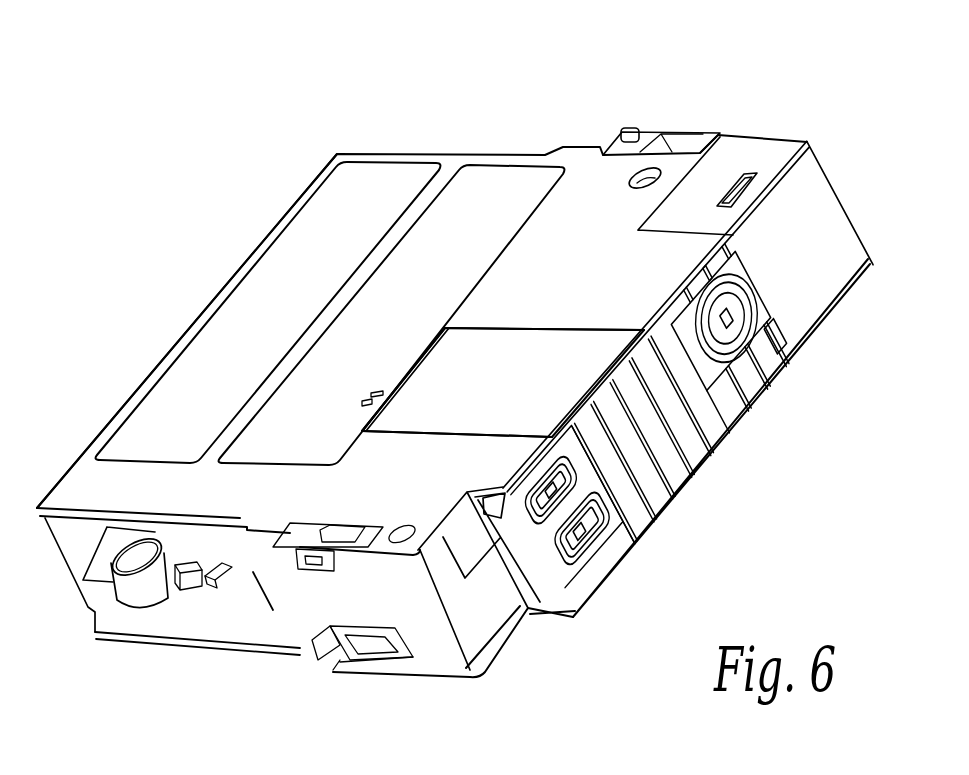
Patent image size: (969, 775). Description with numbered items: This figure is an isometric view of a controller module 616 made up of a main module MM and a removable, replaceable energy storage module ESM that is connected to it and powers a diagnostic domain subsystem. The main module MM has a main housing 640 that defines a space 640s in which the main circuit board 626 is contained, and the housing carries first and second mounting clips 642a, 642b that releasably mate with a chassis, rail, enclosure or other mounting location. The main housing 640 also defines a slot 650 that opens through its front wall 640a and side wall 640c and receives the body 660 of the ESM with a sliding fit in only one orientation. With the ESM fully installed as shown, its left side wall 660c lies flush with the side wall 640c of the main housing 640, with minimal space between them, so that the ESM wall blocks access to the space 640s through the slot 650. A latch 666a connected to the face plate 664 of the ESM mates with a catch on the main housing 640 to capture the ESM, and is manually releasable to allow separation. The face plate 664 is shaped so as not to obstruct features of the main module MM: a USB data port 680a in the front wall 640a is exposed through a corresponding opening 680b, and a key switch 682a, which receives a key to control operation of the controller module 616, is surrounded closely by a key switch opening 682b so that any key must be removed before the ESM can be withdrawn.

The controller module 616 is at (487, 142).
The main module MM is at (380, 193).
The energy storage module ESM is at (508, 362).
The main housing 640 is at (256, 324).
The front wall 640a is at (822, 292).
The side wall 640c is at (476, 308).
The space 640s is at (224, 590).
The first mounting clip 642a is at (631, 128).
The second mounting clip 642b is at (350, 650).
The main circuit board 626 is at (240, 615).
The slot 650 is at (428, 432).
The body 660 is at (455, 378).
The left side wall 660c is at (545, 407).
The face plate 664 is at (700, 456).
The latch 666a is at (570, 473).
The USB data port 680a is at (568, 560).
The opening 680b is at (575, 562).
The key switch 682a is at (737, 313).
The key switch opening 682b is at (706, 287).